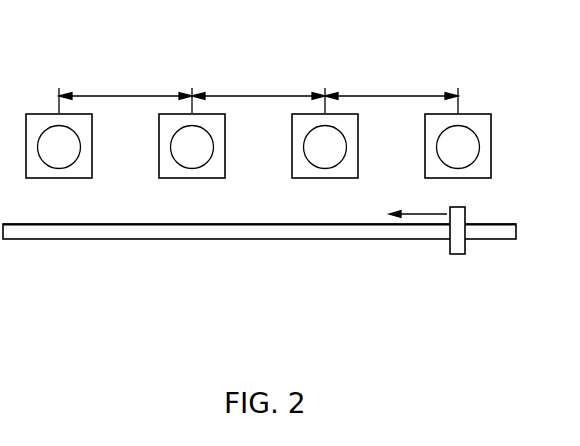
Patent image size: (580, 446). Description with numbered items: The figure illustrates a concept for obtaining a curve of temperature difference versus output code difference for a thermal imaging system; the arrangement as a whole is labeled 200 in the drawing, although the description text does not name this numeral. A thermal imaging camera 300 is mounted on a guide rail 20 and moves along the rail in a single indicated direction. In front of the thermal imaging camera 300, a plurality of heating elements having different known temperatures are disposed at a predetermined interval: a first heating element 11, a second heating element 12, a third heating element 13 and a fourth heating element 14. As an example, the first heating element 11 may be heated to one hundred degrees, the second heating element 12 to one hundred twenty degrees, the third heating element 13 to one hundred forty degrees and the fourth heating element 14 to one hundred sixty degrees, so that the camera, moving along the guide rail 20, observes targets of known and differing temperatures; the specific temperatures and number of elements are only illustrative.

The inspection system 200 is at (83, 31).
The first heating element 11 is at (485, 124).
The second heating element 12 is at (352, 124).
The third heating element 13 is at (219, 124).
The fourth heating element 14 is at (86, 124).
The guide rail 20 is at (493, 223).
The thermal imaging camera 300 is at (457, 255).